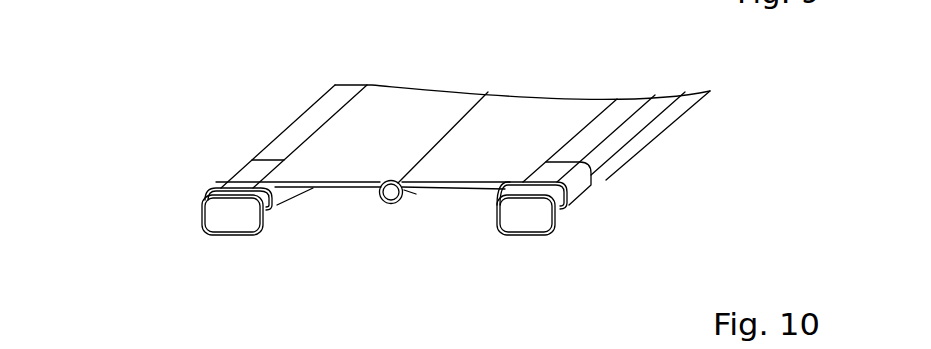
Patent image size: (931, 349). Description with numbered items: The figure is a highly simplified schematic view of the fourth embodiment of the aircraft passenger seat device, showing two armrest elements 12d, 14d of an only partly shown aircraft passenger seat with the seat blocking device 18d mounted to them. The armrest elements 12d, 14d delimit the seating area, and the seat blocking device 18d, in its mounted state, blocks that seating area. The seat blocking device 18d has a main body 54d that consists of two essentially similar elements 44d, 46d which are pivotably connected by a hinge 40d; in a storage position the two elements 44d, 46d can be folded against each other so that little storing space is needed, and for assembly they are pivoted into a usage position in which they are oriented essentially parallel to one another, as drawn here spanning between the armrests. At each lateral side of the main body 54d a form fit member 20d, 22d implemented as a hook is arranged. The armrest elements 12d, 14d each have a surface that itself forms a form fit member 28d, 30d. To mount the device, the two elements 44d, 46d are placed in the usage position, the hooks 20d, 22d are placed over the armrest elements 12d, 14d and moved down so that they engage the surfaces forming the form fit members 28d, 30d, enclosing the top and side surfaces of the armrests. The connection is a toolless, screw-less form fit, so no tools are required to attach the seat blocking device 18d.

The armrest element 12d is at (237, 205).
The armrest element 14d is at (523, 222).
The seat blocking device 18d is at (344, 73).
The form fit member 20d is at (246, 165).
The form fit member 22d is at (577, 199).
The form fit member 28d is at (171, 228).
The form fit member 30d is at (577, 240).
The hinged connecting bar 40d is at (384, 204).
The element of the main body 44d is at (367, 115).
The element of the main body 46d is at (557, 123).
The main body 54d is at (492, 90).